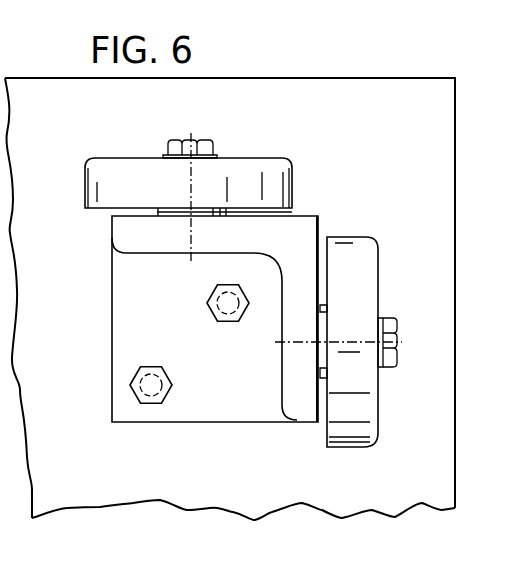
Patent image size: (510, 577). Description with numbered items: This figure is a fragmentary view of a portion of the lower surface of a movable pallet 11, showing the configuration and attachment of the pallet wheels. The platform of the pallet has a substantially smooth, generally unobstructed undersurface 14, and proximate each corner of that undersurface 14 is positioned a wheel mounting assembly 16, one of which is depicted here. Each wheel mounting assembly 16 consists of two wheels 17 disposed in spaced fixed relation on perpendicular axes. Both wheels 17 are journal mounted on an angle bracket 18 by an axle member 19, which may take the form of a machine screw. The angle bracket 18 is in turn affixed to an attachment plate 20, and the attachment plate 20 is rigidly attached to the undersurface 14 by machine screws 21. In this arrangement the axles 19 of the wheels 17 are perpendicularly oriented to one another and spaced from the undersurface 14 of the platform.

The movable pallet 11 is at (373, 73).
The undersurface 14 is at (322, 493).
The wheel mounting assembly 16 is at (213, 423).
The wheel 17 is at (289, 188).
The angle bracket 18 is at (288, 319).
The axle member 19 is at (192, 143).
The attachment plate 20 is at (163, 303).
The machine screw 21 is at (222, 308).